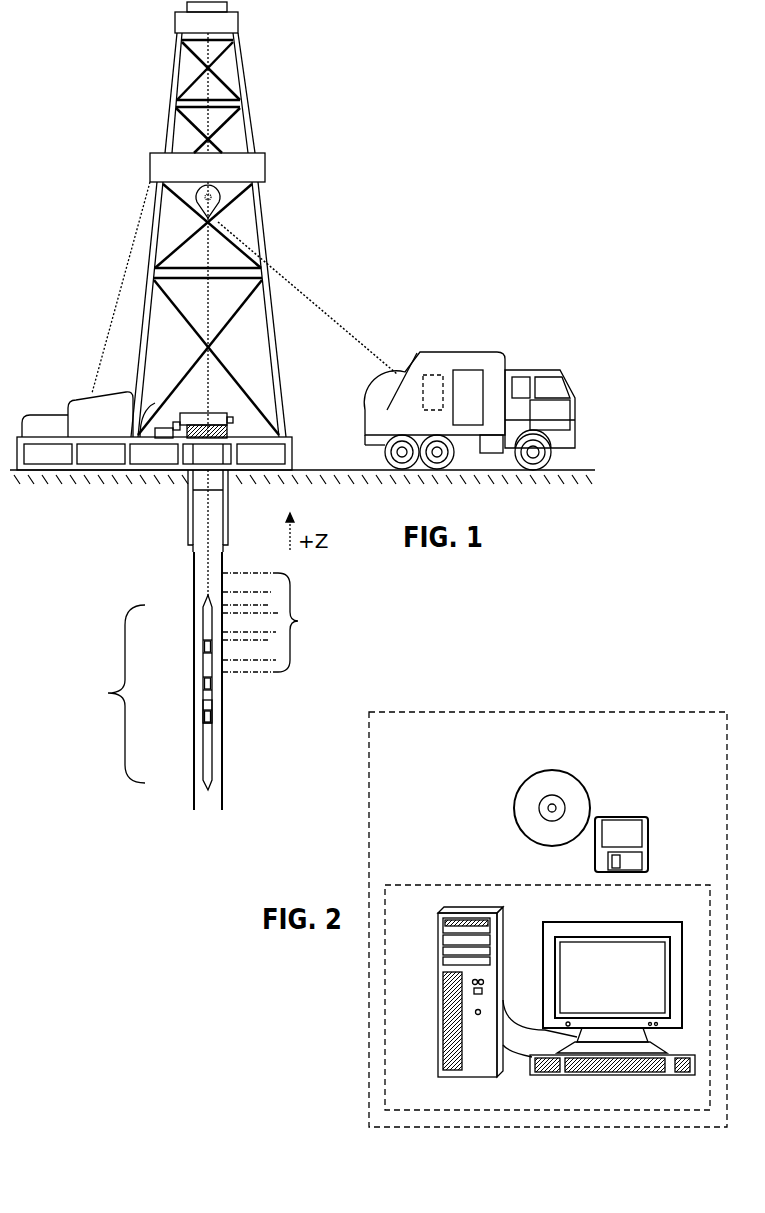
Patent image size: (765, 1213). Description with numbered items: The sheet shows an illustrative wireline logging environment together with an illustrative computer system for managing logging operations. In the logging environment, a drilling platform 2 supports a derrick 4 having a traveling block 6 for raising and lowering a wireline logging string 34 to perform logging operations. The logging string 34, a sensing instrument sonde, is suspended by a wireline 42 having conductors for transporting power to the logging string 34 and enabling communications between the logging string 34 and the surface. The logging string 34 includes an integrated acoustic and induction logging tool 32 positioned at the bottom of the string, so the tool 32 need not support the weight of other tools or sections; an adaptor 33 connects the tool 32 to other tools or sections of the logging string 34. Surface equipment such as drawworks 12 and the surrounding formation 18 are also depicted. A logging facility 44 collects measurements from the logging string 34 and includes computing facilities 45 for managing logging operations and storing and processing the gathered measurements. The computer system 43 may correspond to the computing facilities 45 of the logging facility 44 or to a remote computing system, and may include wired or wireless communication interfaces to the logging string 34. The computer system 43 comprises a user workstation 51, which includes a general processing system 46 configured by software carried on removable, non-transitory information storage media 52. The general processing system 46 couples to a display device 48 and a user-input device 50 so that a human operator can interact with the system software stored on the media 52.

In FIG. 1, the drilling platform 2 is at (293, 447).
In FIG. 1, the derrick 4 is at (277, 402).
In FIG. 1, the traveling block 6 is at (222, 198).
In FIG. 1, the drawworks 12 is at (220, 412).
In FIG. 1, the earth formation 18 is at (277, 622).
In FIG. 1, the integrated acoustic and induction logging tool 32 is at (212, 737).
In FIG. 1, the adaptor 33 is at (207, 718).
In FIG. 1, the wireline logging string 34 is at (105, 694).
In FIG. 1, the wireline 42 is at (273, 270).
In FIG. 2, the computer system 43 is at (713, 752).
In FIG. 1, the logging facility 44 is at (495, 353).
In FIG. 1, the computing facilities 45 is at (428, 373).
In FIG. 2, the general processing system 46 is at (503, 1005).
In FIG. 2, the display device 48 is at (671, 1022).
In FIG. 2, the user-input device 50 is at (692, 1075).
In FIG. 2, the user workstation 51 is at (426, 927).
In FIG. 2, the information storage media 52 is at (607, 817).